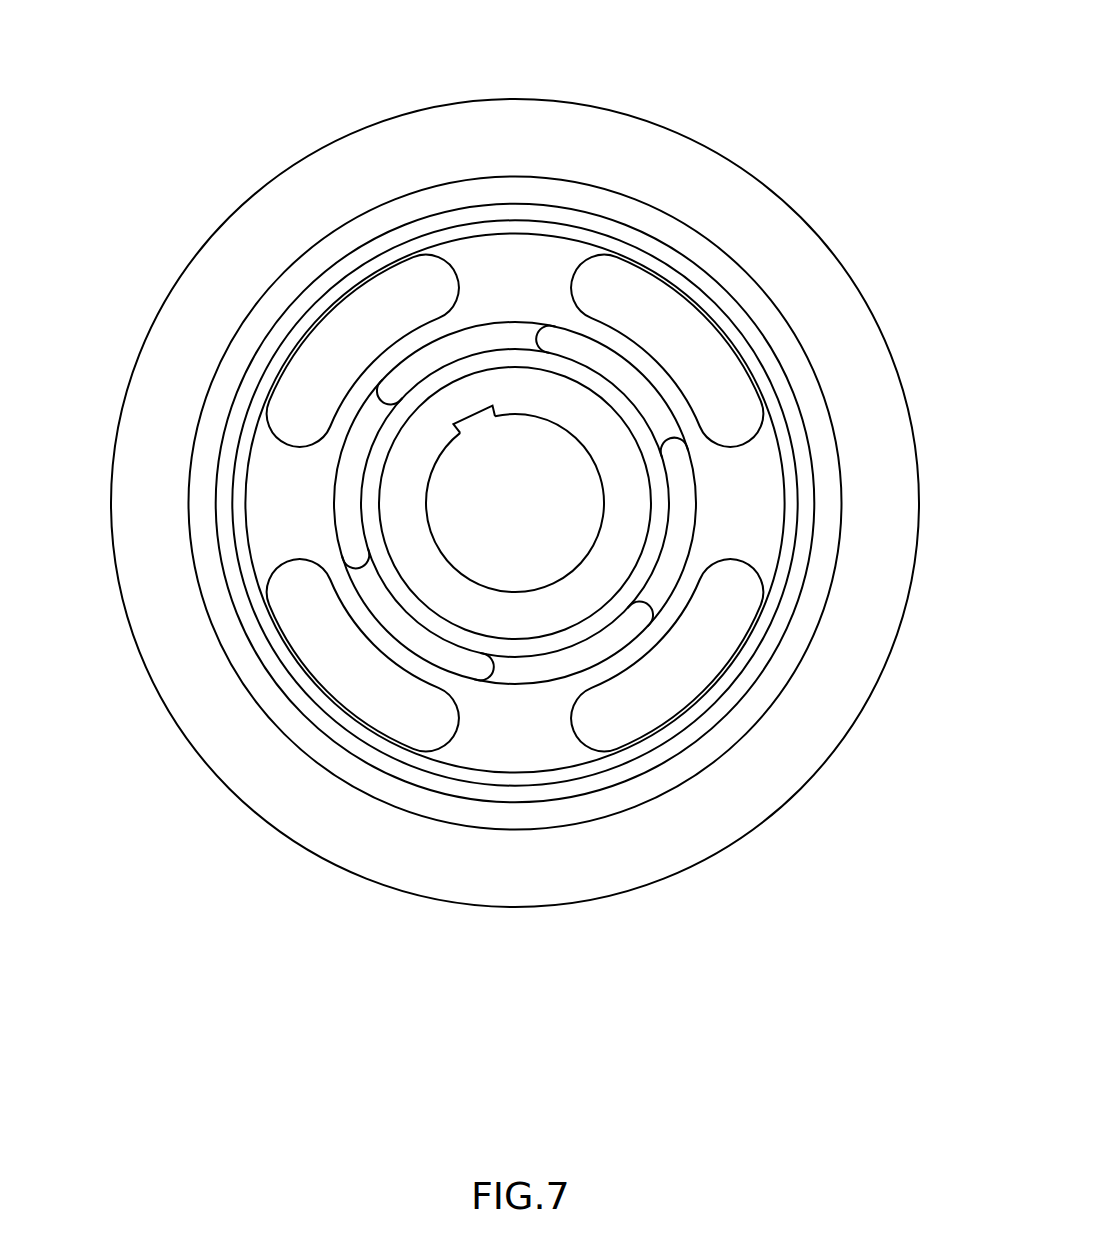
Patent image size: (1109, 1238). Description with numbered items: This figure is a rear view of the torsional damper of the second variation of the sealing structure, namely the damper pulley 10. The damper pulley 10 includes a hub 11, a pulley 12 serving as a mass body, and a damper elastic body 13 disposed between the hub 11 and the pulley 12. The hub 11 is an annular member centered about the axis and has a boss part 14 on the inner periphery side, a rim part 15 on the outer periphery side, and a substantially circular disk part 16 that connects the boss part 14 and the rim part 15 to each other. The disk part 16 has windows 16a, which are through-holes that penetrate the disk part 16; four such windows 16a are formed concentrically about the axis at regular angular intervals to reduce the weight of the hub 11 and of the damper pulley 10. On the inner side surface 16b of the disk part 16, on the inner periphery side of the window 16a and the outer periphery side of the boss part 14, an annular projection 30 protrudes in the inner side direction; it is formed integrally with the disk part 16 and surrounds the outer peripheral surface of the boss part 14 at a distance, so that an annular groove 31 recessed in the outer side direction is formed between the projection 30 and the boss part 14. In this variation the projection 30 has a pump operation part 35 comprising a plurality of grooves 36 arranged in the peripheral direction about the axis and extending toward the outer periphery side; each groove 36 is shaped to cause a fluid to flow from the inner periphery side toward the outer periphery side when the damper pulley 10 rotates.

The damper pulley 10 is at (833, 134).
The hub 11 is at (498, 994).
The pulley 12 is at (834, 302).
The damper elastic body 13 is at (817, 417).
The boss part 14 is at (507, 620).
The rim part 15 is at (612, 782).
The disk part 16 is at (531, 742).
The window 16a is at (372, 307).
The inner side surface 16b is at (372, 396).
The projection 30 is at (702, 534).
The annular groove 31 is at (657, 477).
The pump operation part 35 is at (318, 486).
The groove 36 is at (520, 330).